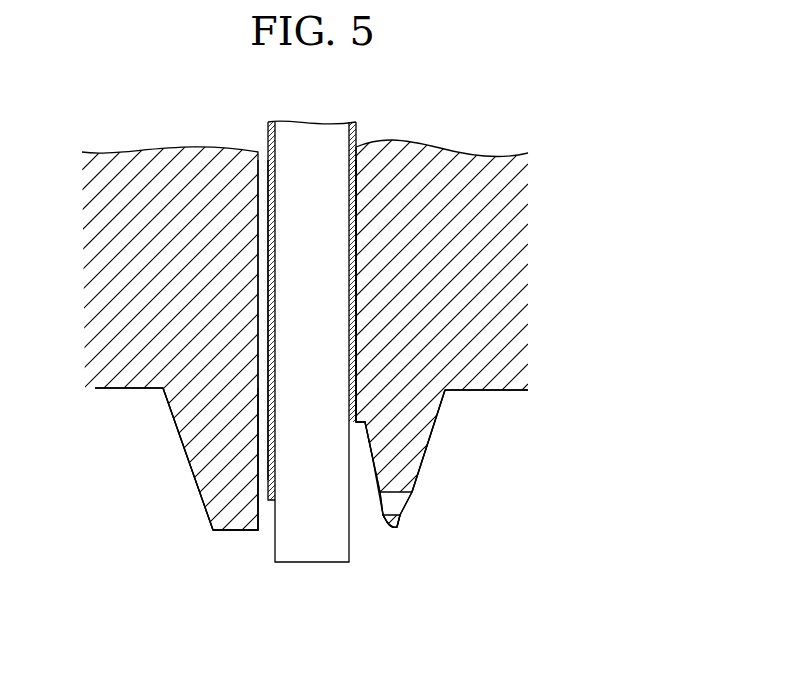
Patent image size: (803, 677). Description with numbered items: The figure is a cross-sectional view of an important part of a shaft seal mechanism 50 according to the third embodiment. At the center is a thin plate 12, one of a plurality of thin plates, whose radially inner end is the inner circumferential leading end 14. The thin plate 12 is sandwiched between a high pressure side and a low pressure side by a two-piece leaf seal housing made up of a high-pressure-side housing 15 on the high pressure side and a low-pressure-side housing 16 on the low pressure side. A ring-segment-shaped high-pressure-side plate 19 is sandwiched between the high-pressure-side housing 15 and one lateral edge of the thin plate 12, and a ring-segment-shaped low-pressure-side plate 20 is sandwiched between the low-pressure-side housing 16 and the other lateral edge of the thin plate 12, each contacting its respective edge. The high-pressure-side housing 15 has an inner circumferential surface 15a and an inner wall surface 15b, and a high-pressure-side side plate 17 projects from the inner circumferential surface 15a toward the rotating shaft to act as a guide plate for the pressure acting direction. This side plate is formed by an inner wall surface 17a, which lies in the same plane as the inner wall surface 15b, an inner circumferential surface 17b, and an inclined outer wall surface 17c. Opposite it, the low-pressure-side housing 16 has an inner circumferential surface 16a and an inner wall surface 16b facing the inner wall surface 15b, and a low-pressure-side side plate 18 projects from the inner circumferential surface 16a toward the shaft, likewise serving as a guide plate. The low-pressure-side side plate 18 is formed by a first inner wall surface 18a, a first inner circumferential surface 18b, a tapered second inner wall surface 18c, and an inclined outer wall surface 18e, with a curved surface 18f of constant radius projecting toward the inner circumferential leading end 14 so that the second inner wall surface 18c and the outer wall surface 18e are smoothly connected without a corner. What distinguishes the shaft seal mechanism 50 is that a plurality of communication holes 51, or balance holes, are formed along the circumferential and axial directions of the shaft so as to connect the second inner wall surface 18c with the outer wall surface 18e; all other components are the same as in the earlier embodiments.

The shaft seal mechanism 50 is at (566, 121).
The thin plate 12 is at (325, 235).
The inner circumferential leading end 14 is at (312, 552).
The high-pressure-side housing 15 is at (202, 140).
The inner circumferential surface 15a is at (110, 392).
The inner wall surface 15b is at (268, 292).
The low-pressure-side housing 16 is at (436, 157).
The inner circumferential surface 16a is at (503, 393).
The inner wall surface 16b is at (349, 180).
The high-pressure-side side plate 17 is at (198, 494).
The inner wall surface 17a is at (258, 470).
The inner circumferential surface 17b is at (233, 532).
The outer wall surface 17c is at (188, 457).
The low-pressure-side side plate 18 is at (407, 463).
The first inner wall surface 18a is at (353, 408).
The first inner circumferential surface 18b is at (362, 430).
The second inner wall surface 18c is at (372, 482).
The outer wall surface 18e is at (428, 448).
The curved surface 18f is at (386, 524).
The high-pressure-side plate 19 is at (268, 231).
The low-pressure-side plate 20 is at (356, 264).
The communication hole 51 is at (408, 503).